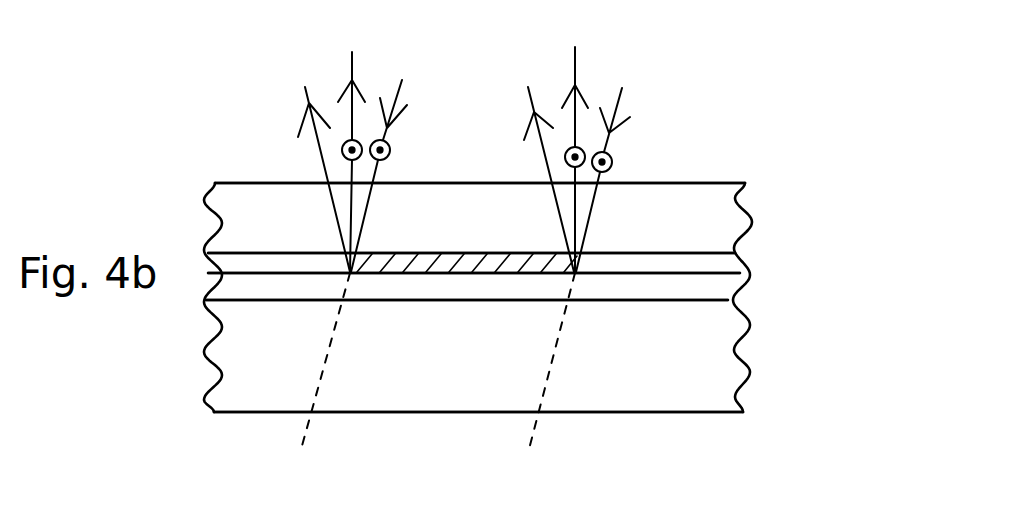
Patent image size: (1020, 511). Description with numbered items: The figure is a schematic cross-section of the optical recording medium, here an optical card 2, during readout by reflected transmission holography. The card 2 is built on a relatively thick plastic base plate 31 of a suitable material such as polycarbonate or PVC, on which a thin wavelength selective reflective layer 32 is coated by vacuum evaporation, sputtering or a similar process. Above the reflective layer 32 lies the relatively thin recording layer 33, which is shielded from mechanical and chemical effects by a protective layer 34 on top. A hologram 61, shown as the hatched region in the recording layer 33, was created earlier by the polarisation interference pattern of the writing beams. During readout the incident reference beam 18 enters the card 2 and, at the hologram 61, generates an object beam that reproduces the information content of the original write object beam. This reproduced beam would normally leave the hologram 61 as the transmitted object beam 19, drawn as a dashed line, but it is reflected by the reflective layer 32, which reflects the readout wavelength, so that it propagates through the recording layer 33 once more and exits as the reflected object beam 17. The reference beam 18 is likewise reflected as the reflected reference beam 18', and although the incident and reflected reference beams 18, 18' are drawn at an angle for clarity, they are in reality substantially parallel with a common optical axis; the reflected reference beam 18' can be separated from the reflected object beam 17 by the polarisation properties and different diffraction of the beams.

The optical card 2 is at (796, 181).
The reflected object beam 17 is at (531, 100).
The incident reference beam 18 is at (513, 173).
The reflected reference beam 18' is at (486, 152).
The transmitted object beam 19 is at (567, 373).
The plastic base plate 31 is at (474, 356).
The reflective layer 32 is at (720, 286).
The recording layer 33 is at (720, 258).
The protective layer 34 is at (476, 218).
The hologram 61 is at (488, 273).